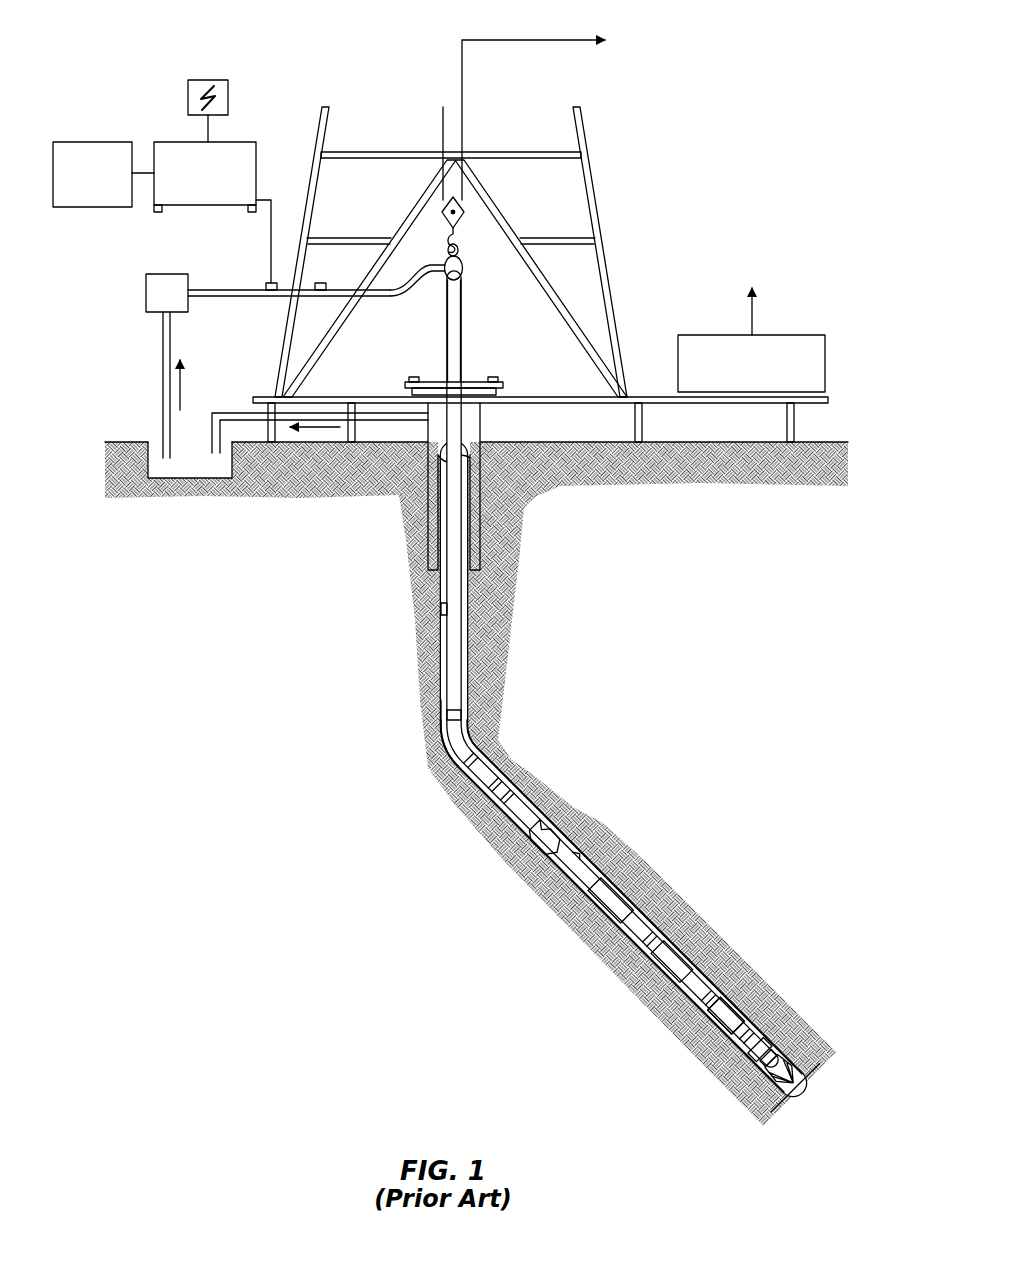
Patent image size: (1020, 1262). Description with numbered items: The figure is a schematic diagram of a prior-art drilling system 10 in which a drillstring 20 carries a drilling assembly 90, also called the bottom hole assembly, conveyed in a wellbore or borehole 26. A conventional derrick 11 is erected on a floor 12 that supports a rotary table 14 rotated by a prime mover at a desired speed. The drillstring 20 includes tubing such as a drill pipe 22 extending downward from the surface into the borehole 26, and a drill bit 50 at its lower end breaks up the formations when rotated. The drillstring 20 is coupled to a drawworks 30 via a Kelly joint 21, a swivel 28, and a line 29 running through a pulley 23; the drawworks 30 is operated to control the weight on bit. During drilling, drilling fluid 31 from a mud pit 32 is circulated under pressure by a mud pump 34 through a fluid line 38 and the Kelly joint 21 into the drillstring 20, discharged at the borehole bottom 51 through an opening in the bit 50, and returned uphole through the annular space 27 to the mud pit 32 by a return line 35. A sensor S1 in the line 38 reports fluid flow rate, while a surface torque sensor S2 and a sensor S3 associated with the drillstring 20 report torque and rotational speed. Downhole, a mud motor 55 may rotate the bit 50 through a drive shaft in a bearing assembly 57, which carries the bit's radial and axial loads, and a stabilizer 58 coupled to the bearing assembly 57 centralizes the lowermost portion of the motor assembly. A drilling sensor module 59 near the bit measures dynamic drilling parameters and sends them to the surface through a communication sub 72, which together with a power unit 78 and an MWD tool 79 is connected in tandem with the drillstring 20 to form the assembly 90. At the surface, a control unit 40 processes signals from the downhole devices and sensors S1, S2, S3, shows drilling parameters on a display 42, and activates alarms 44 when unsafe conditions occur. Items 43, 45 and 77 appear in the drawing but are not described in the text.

The drilling system 10 is at (385, 48).
The derrick 11 is at (608, 256).
The floor 12 is at (627, 397).
The rotary table 14 is at (470, 378).
The drillstring 20 is at (465, 665).
The Kelly joint 21 is at (462, 308).
The drill pipe 22 is at (441, 637).
The pulley 23 is at (458, 211).
The wellbore 26 is at (470, 740).
The annular space 27 is at (490, 772).
The swivel 28 is at (423, 293).
The line 29 is at (470, 124).
The drawworks 30 is at (795, 337).
The drilling fluid 31 is at (155, 445).
The mud pit 32 is at (182, 480).
The mud pump 34 is at (157, 274).
The return line 35 is at (392, 420).
The fluid line 38 is at (265, 297).
The surface control unit 40 is at (190, 142).
The display/monitor 42 is at (207, 80).
The sensor 43 is at (268, 283).
The alarms 44 is at (93, 208).
The signal line 45 is at (268, 200).
The drill bit 50 is at (790, 1057).
The borehole bottom 51 is at (770, 1117).
The downhole motor 55 is at (650, 918).
The bearing assembly 57 is at (760, 1018).
The stabilizer 58 is at (768, 1033).
The drilling sensor module 59 is at (746, 1065).
The communication sub 72 is at (441, 755).
The mud motor 77 is at (540, 872).
The power unit 78 is at (463, 777).
The MWD tool 79 is at (484, 805).
The drilling assembly 90 is at (672, 824).
The sensor S1 is at (321, 283).
The surface torque sensor S2 is at (495, 377).
The sensor S3 is at (413, 376).